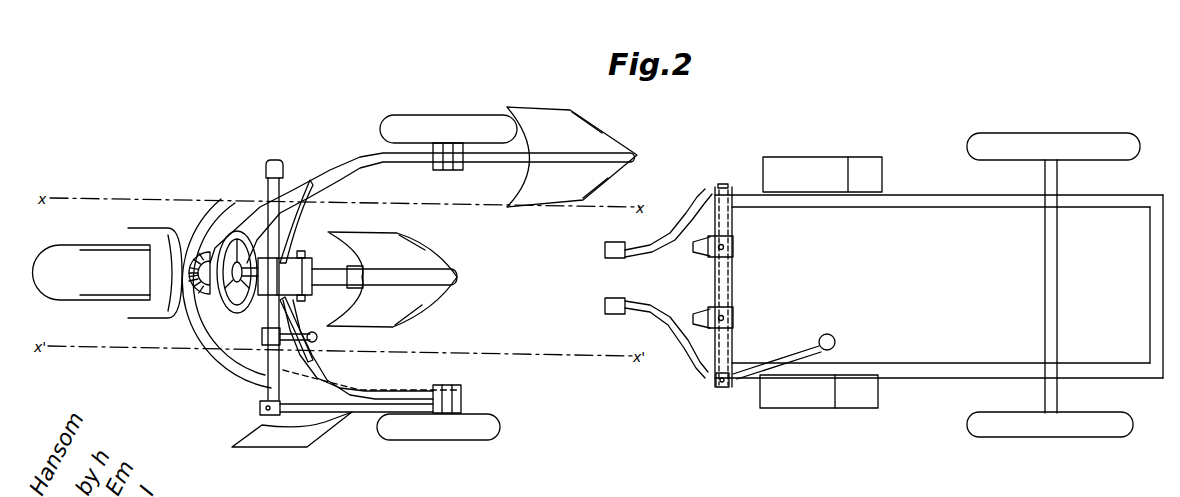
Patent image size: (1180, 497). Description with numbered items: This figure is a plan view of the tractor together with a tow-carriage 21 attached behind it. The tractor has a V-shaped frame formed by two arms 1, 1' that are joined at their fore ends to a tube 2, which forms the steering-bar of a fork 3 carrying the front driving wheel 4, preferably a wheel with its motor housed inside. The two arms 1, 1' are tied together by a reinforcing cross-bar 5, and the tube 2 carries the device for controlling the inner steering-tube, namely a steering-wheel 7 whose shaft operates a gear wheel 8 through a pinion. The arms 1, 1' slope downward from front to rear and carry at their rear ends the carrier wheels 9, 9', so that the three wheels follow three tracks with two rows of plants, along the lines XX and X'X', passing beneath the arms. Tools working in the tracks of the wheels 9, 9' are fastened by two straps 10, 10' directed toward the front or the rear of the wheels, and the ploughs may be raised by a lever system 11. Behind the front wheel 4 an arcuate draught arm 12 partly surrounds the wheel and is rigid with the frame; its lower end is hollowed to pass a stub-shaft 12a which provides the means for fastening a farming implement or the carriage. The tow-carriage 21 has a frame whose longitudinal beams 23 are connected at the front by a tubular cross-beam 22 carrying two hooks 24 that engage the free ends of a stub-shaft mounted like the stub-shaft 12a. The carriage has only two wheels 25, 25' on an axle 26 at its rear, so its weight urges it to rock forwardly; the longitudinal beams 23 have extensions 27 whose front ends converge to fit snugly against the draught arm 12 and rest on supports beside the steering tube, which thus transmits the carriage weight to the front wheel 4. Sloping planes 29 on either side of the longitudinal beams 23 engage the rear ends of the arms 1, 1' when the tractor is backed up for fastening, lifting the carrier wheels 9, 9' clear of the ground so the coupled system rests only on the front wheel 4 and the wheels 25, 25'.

The arm 1 is at (334, 348).
The arm 1' is at (422, 193).
The tube 2 is at (204, 256).
The fork 3 is at (177, 318).
The driving wheel 4 is at (91, 272).
The reinforcing cross-bar 5 is at (317, 195).
The steering-wheel 7 is at (239, 233).
The gear wheel 8 is at (202, 253).
The carrier wheel 9 is at (438, 440).
The carrier wheel 9' is at (448, 116).
The strap 10 is at (453, 388).
The strap 10' is at (445, 171).
The lever system 11 is at (258, 407).
The draught arm 12 is at (258, 333).
The stub-shaft 12a is at (301, 254).
The tow-carriage 21 is at (1130, 352).
The cross-beam 22 is at (733, 222).
The longitudinal beams 23 is at (922, 205).
The hooks 24 is at (735, 313).
The wheel 25 is at (1050, 436).
The wheel 25' is at (1053, 129).
The axle 26 is at (1045, 289).
The extensions 27 is at (665, 305).
The sloping planes 29 is at (805, 167).